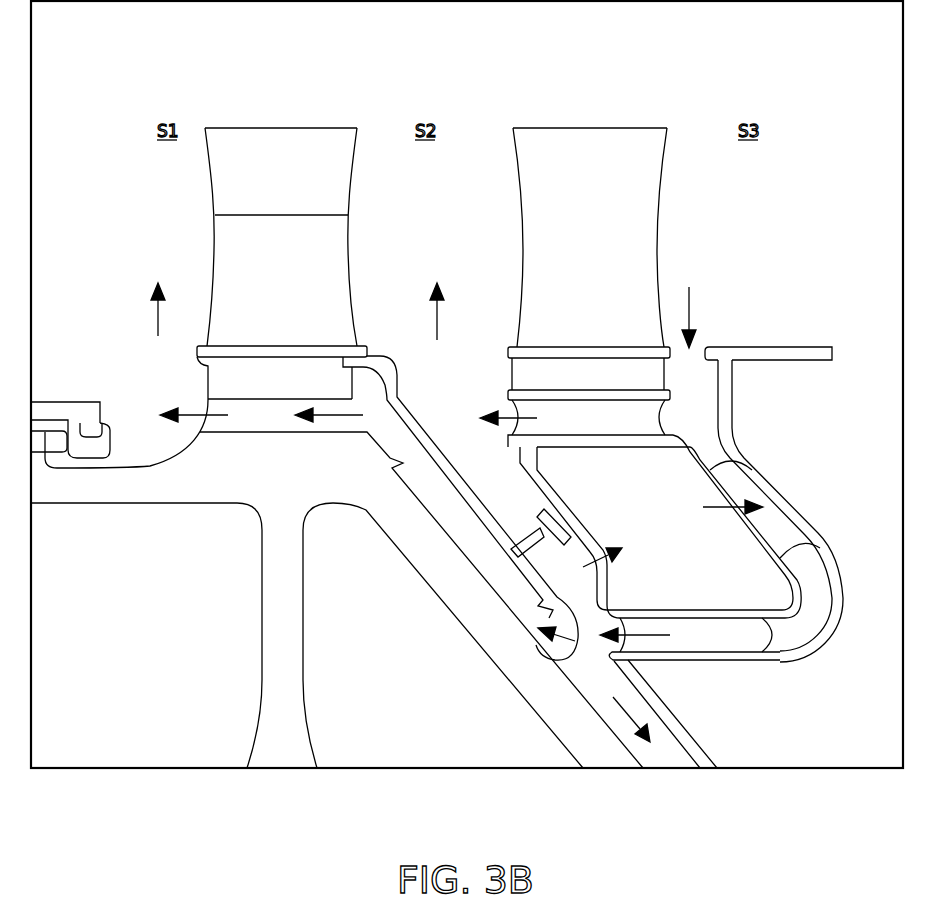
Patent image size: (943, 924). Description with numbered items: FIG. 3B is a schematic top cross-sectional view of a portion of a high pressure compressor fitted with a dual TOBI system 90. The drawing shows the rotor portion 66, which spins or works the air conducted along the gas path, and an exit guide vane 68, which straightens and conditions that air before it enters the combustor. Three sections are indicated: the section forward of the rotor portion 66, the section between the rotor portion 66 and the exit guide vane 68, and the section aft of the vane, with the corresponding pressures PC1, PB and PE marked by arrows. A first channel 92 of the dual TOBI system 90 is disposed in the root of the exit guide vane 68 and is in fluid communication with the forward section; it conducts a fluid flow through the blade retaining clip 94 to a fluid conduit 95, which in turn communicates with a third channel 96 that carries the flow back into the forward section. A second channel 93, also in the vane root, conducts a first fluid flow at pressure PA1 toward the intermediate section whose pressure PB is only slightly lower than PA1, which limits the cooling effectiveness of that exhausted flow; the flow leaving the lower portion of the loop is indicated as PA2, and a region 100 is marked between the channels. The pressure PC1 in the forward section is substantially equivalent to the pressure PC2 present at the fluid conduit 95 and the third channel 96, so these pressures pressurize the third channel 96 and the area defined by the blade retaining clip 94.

The rotor portion 66 is at (282, 148).
The exit guide vane 68 is at (590, 148).
The dual TOBI system 90 is at (845, 540).
The first channel 92 is at (716, 450).
The second channel 93 is at (565, 422).
The blade retaining clip 94 is at (410, 412).
The fluid conduit 95 is at (533, 622).
The third channel 96 is at (235, 425).
The heat exchanger loop 100 is at (790, 498).
The pressure in section S1 PC1 is at (167, 258).
The pressure of section S2 PB is at (407, 258).
The exhaust flow PE is at (745, 258).
The pressure of first fluid flow PA1 is at (520, 447).
The second air flow PA2 is at (775, 637).
The pressure at fluid conduit and third channel PC2 is at (582, 673).